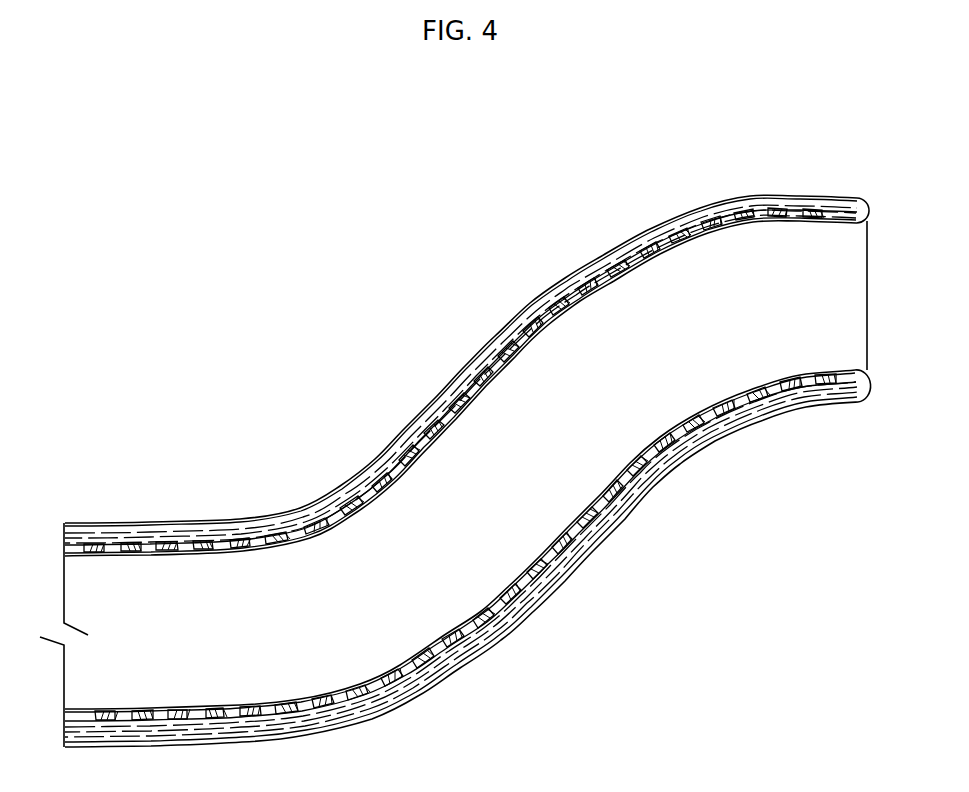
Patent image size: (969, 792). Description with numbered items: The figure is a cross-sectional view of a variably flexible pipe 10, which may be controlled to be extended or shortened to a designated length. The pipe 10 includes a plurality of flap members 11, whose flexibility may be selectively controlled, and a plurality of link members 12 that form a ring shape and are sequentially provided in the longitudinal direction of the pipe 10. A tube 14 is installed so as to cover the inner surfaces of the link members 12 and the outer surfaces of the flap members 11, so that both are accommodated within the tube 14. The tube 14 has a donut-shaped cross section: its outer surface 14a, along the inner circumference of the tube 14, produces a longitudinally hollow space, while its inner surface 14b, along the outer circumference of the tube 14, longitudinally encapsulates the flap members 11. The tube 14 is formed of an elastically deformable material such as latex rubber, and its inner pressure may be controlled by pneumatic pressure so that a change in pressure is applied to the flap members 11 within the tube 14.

The variably flexible pipe 10 is at (396, 270).
The flap member 11 is at (447, 393).
The link member 12 is at (547, 330).
The tube 14 is at (638, 228).
The outer surface 14a is at (594, 284).
The inner surface 14b is at (538, 297).